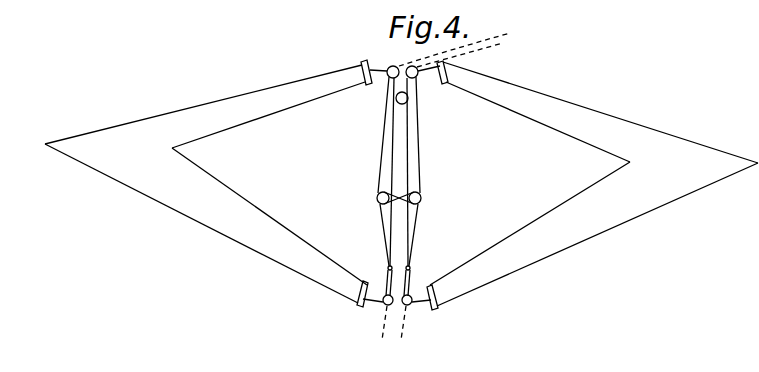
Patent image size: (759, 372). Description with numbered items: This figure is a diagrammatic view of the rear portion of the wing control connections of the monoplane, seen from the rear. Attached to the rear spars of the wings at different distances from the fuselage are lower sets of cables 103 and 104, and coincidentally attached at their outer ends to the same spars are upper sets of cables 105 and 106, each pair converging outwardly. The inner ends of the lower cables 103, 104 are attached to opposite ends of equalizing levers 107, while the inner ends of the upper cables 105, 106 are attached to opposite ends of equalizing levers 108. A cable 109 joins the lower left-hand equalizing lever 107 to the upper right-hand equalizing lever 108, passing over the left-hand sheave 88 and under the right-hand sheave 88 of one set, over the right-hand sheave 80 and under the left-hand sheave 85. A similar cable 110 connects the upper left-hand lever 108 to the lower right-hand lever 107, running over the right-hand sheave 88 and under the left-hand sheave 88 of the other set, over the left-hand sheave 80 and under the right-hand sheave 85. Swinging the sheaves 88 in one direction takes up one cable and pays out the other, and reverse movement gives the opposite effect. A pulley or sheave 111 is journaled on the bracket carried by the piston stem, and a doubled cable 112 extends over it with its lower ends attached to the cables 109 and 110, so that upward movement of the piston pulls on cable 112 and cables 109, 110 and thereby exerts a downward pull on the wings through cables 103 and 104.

The pulleys or sheaves 80 is at (461, 48).
The pulleys or sheaves 85 is at (397, 330).
The sets of pulleys or sheaves 88 is at (378, 200).
The lower set of cables 103 is at (255, 252).
The lower set of cables 104 is at (303, 243).
The upper set of cables 105 is at (165, 115).
The upper set of cables 106 is at (232, 128).
The equalizing levers 107 is at (360, 306).
The equalizing levers 108 is at (353, 70).
The cable 109 is at (417, 138).
The cable 110 is at (385, 143).
The pulley or sheave 111 is at (406, 103).
The doubled cable 112 is at (383, 233).